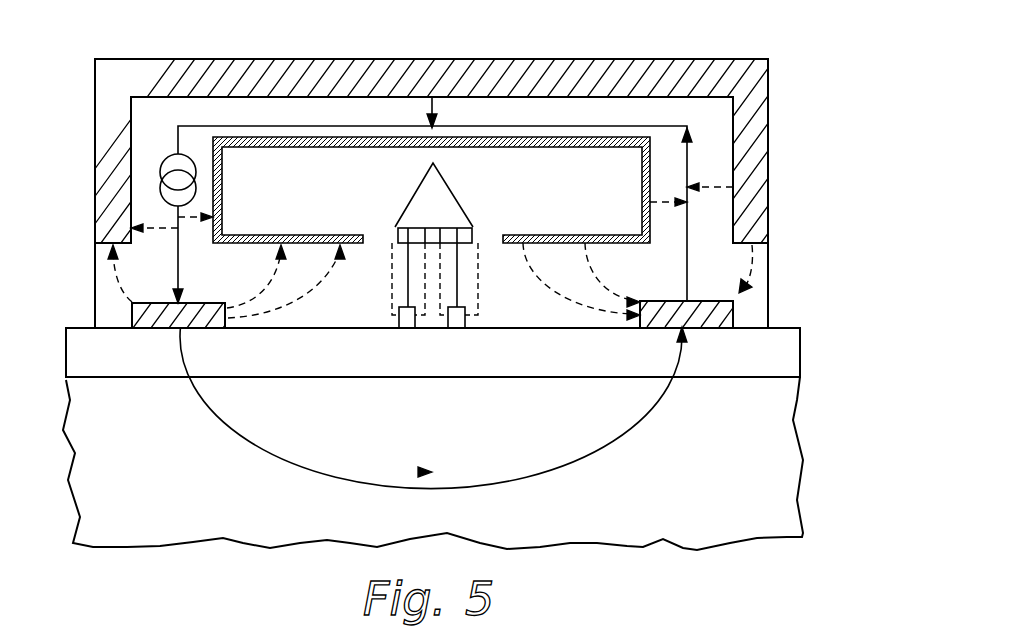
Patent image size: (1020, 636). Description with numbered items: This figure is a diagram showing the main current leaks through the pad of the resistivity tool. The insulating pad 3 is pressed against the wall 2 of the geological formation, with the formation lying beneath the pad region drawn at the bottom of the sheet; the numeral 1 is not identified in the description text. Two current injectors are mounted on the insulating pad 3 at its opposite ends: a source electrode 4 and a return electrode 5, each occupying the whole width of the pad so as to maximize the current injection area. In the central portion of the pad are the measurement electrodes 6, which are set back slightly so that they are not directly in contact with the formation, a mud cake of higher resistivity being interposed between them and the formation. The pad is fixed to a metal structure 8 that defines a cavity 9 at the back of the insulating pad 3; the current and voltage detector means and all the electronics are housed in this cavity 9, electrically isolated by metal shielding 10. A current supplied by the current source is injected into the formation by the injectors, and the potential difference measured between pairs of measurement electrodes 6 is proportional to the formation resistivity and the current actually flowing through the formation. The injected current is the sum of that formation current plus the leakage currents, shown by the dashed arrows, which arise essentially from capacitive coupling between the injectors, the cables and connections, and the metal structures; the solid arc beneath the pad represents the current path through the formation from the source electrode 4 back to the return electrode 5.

The insulating layer 1 is at (537, 363).
The wall 2 is at (433, 463).
The insulating pad 3 is at (426, 239).
The source electrode 4 is at (200, 307).
The return electrode 5 is at (663, 300).
The measurement electrodes 6 is at (410, 322).
The metal structure 8 is at (660, 62).
The cavity 9 is at (432, 200).
The metal shielding 10 is at (278, 147).